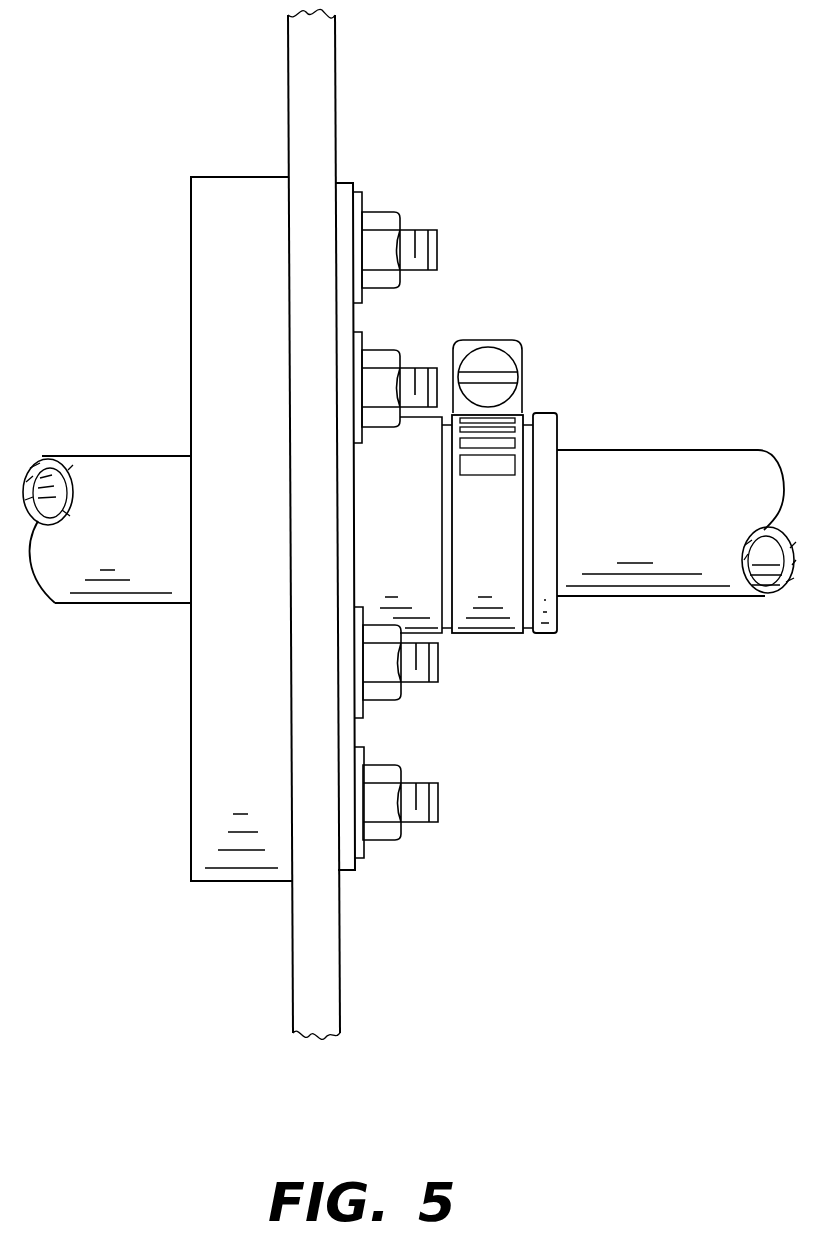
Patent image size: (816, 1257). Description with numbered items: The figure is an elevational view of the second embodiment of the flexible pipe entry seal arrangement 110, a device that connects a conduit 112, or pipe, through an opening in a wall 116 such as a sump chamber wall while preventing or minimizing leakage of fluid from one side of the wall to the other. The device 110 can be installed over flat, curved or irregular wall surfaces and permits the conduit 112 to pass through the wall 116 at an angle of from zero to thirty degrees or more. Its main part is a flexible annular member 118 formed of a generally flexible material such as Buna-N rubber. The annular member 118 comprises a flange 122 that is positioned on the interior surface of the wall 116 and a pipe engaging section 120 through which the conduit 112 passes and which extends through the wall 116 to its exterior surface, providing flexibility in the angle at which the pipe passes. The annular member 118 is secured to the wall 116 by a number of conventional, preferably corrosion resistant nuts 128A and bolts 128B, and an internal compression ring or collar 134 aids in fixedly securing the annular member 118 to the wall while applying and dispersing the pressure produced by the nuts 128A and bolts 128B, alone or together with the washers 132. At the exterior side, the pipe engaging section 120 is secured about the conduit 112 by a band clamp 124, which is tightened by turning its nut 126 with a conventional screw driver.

The flexible pipe entry seal arrangement 110 is at (112, 693).
The conduit 112 is at (152, 548).
The wall 116 is at (313, 83).
The flexible annular member 118 is at (200, 915).
The pipe engaging section 120 is at (530, 633).
The flange 122 is at (268, 548).
The band clamp 124 is at (512, 543).
The nut 126 is at (487, 362).
The nuts 128A is at (378, 222).
The bolts 128B is at (420, 255).
The washers 132 is at (358, 200).
The internal compression ring 134 is at (341, 197).